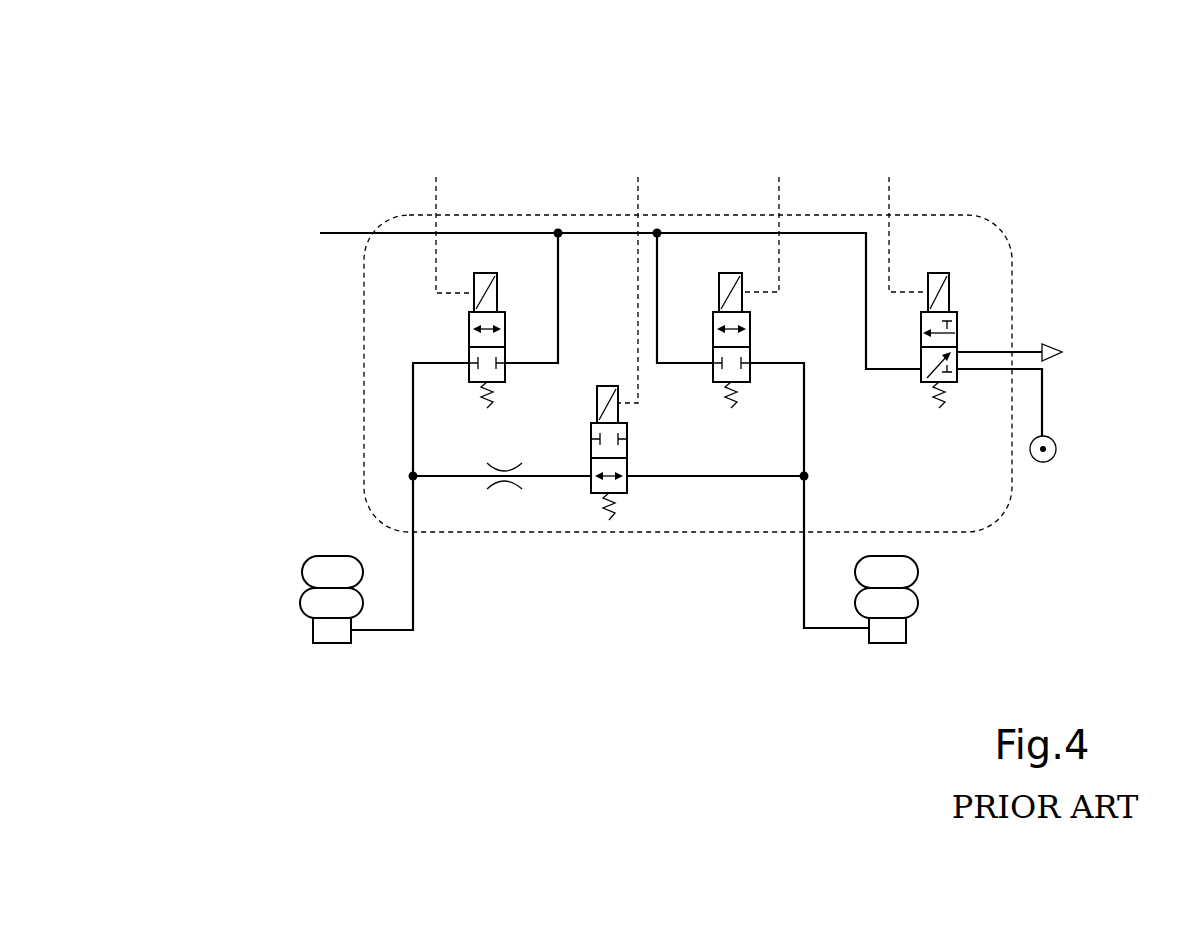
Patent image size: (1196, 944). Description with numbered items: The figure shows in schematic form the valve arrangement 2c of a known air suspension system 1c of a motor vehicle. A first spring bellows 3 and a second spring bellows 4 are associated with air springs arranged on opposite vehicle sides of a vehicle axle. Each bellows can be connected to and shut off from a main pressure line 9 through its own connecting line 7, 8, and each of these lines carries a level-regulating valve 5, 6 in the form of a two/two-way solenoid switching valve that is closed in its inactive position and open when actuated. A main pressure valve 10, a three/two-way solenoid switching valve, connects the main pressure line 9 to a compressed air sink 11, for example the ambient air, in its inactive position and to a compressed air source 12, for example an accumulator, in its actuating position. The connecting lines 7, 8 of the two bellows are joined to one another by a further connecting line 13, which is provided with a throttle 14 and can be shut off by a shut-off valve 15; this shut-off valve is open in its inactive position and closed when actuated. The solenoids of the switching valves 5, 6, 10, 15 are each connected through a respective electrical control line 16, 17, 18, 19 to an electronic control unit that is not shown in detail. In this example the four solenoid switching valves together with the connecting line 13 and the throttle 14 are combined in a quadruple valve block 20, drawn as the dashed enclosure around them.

The air suspension system 1c is at (241, 102).
The valve arrangement 2c is at (292, 150).
The first spring bellows 3 is at (333, 572).
The second spring bellows 4 is at (887, 572).
The level-regulating valve 5 is at (446, 339).
The level-regulating valve 6 is at (739, 247).
The connecting line 7 is at (558, 300).
The connecting line 8 is at (658, 302).
The main pressure line 9 is at (343, 233).
The main pressure valve 10 is at (975, 338).
The compressed air sink 11 is at (1062, 352).
The compressed air source 12 is at (1056, 449).
The connecting line 13 is at (706, 476).
The throttle 14 is at (506, 503).
The shut-off valve 15 is at (604, 360).
The electrical control line 16 is at (436, 195).
The electrical control line 17 is at (779, 195).
The electrical control line 18 is at (889, 195).
The electrical control line 19 is at (638, 195).
The quadruple valve block 20 is at (363, 410).